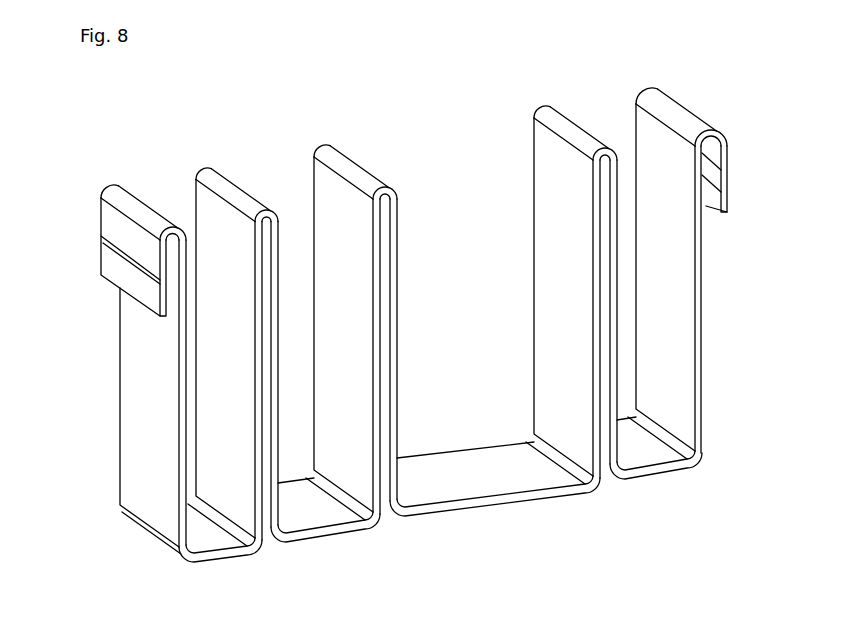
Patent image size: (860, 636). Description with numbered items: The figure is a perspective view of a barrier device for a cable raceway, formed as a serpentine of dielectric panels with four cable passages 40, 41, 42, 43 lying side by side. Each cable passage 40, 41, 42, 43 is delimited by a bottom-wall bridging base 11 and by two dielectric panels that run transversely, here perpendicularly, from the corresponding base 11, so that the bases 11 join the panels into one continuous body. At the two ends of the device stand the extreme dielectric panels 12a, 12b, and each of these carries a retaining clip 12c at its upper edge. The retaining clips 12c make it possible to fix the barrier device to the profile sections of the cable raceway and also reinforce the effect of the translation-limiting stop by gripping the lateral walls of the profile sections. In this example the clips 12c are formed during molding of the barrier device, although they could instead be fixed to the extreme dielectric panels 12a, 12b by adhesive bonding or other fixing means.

The base 11 is at (212, 533).
The extreme dielectric panel 12a is at (150, 452).
The extreme dielectric panel 12b is at (663, 327).
The retaining clip 12c is at (120, 265).
The cable passage 40 is at (185, 208).
The cable passage 41 is at (282, 186).
The cable passage 42 is at (447, 170).
The cable passage 43 is at (607, 125).